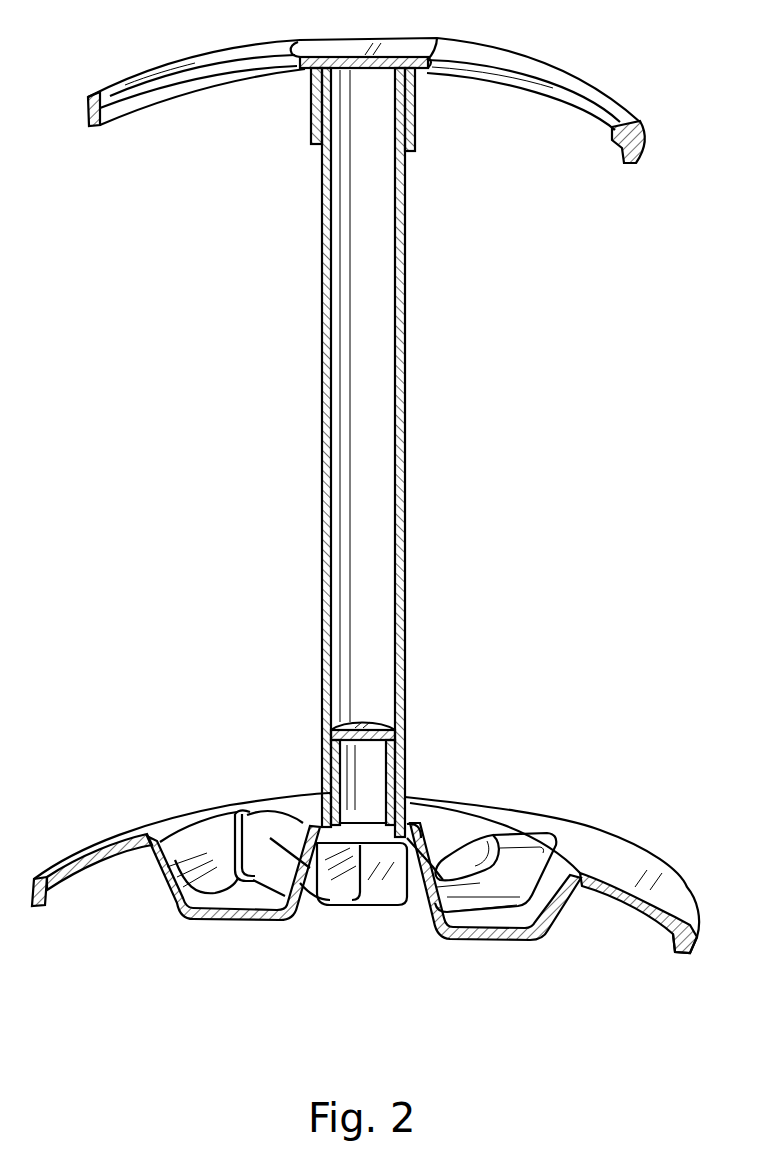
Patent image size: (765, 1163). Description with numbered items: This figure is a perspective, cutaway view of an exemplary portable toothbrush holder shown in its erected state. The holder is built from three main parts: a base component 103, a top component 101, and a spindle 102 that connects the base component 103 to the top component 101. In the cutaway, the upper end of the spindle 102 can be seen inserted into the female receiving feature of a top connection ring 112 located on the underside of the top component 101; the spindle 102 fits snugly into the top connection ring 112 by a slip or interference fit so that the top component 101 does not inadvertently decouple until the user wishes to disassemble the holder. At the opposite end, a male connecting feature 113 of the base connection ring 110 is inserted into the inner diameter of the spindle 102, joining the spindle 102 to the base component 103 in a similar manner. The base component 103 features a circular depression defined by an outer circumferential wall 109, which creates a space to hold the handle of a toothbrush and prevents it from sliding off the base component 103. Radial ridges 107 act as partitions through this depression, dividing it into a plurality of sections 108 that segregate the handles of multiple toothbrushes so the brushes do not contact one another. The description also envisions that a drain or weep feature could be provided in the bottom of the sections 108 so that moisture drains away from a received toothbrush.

The top component 101 is at (590, 83).
The top connection ring 112 is at (413, 123).
The spindle 102 is at (405, 471).
The male connecting feature 113 is at (375, 778).
The base component 103 is at (625, 853).
The sections 108 is at (238, 895).
The outer circumferential wall 109 is at (202, 845).
The base connection ring 110 is at (322, 823).
The radial ridges 107 is at (517, 840).